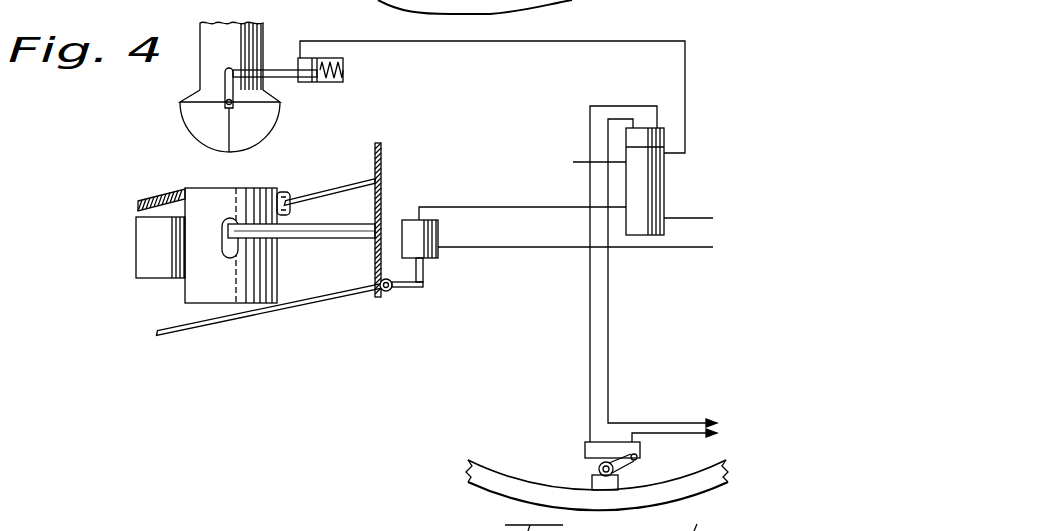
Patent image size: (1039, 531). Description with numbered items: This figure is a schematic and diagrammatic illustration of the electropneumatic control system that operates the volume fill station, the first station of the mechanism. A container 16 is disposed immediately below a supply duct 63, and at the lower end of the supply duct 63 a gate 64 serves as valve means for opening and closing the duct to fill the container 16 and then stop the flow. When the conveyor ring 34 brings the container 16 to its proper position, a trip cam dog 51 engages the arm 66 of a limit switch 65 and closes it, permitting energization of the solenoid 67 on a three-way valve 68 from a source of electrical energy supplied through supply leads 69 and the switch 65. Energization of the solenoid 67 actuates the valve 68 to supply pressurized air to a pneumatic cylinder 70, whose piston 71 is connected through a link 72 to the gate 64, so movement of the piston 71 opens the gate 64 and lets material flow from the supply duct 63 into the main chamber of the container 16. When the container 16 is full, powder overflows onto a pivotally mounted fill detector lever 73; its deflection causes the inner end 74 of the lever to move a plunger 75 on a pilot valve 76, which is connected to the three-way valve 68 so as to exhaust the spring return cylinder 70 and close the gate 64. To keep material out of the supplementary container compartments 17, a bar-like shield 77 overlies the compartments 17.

The container 16 is at (212, 281).
The supplementary container compartment 17 is at (153, 248).
The conveyor ring 34 is at (525, 487).
The cam dog 51 is at (601, 478).
The supply duct 63 is at (231, 45).
The gate 64 is at (207, 123).
The limit switch 65 is at (585, 450).
The arm 66 is at (626, 468).
The solenoid 67 is at (644, 130).
The three-way valve 68 is at (648, 213).
The supply leads 69 is at (673, 423).
The pneumatic cylinder 70 is at (326, 83).
The piston 71 is at (277, 66).
The link 72 is at (226, 82).
The fill detector lever 73 is at (190, 331).
The inner end 74 is at (405, 288).
The plunger 75 is at (424, 269).
The pilot valve 76 is at (410, 236).
The bar-like shield 77 is at (175, 193).